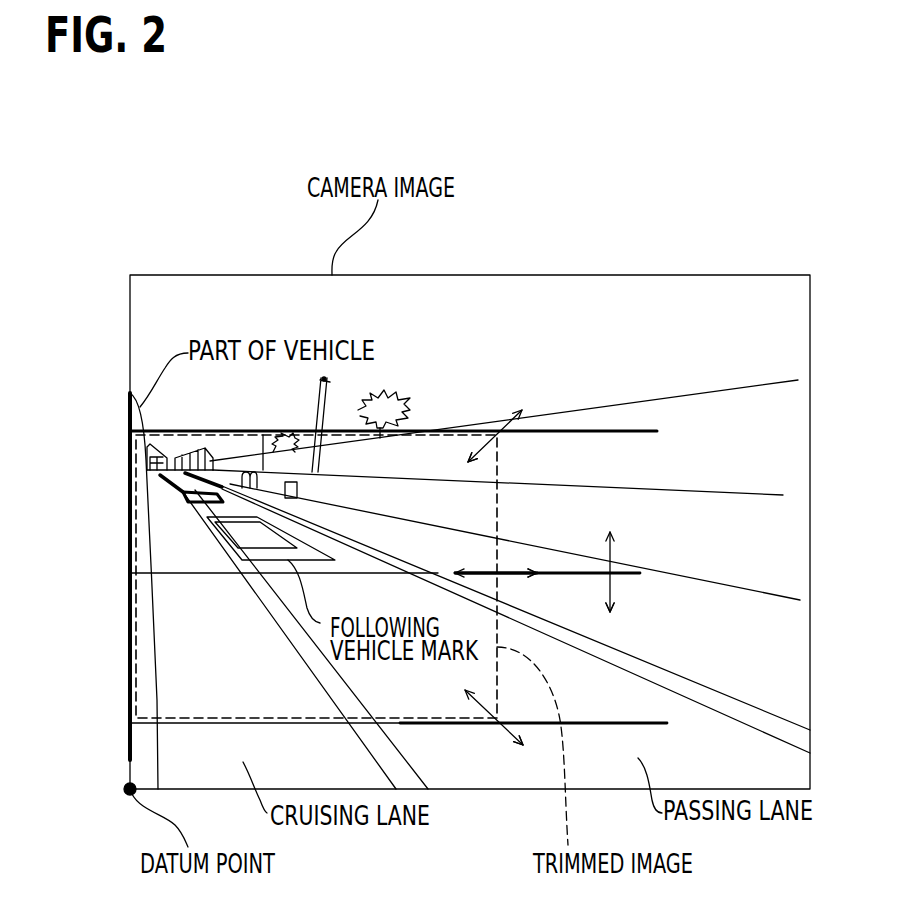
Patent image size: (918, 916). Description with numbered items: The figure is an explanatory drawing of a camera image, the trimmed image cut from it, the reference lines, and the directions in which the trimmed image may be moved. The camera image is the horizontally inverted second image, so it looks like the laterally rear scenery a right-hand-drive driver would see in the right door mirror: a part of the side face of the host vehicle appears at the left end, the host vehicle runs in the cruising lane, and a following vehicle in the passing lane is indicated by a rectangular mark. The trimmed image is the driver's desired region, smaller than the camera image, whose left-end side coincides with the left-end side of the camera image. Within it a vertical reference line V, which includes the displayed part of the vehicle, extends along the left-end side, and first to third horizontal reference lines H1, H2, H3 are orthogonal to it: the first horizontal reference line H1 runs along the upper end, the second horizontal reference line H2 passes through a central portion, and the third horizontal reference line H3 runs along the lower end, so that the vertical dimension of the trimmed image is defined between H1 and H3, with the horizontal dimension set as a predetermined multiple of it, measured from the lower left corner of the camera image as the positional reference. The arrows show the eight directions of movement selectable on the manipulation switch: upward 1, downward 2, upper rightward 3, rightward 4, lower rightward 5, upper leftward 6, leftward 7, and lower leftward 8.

The upward direction of movement 1 is at (632, 557).
The downward direction of movement 2 is at (611, 623).
The upper rightward direction of movement 3 is at (503, 426).
The rightward direction of movement 4 is at (551, 590).
The lower rightward direction of movement 5 is at (528, 751).
The upper leftward direction of movement 6 is at (465, 468).
The leftward direction of movement 7 is at (481, 590).
The lower leftward direction of movement 8 is at (485, 706).
The first horizontal reference line H1 is at (612, 431).
The second horizontal reference line H2 is at (587, 572).
The third horizontal reference line H3 is at (603, 723).
The vertical reference line V is at (127, 460).